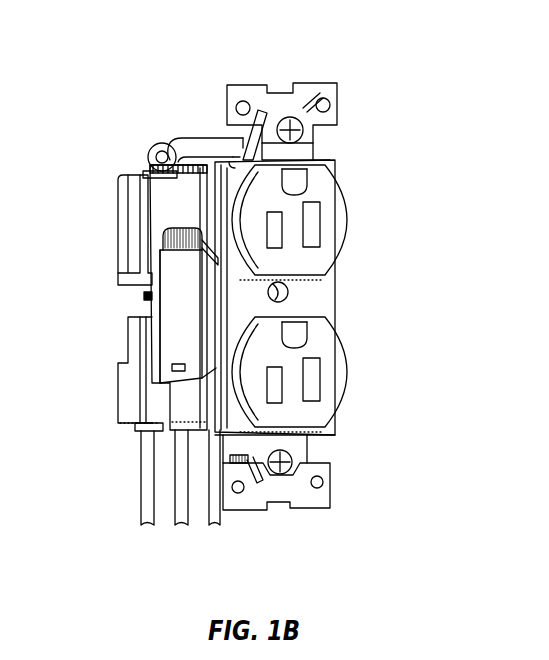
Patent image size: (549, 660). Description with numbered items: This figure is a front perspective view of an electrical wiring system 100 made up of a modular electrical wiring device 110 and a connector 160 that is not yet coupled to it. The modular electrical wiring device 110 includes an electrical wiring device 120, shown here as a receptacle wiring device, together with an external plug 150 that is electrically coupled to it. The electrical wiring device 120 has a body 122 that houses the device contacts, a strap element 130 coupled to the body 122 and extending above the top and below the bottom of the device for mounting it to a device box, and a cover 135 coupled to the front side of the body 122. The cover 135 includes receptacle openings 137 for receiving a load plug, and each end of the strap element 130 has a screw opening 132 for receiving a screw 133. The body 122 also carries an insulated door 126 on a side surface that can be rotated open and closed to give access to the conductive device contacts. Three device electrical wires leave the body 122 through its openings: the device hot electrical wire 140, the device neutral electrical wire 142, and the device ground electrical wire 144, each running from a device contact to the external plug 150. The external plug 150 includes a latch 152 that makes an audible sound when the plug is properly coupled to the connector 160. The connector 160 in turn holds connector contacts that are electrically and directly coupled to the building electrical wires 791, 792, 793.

The electrical wiring system 100 is at (146, 62).
The modular electrical wiring device 110 is at (376, 216).
The electrical wiring device 120 is at (318, 300).
The body 122 is at (185, 198).
The insulated door 126 is at (178, 328).
The strap element 130 is at (305, 88).
The screw opening 132 is at (272, 472).
The screw 133 is at (268, 472).
The cover 135 is at (320, 185).
The receptacle opening 137 is at (320, 383).
The device hot electrical wire 140 is at (150, 152).
The device neutral electrical wire 142 is at (233, 150).
The device ground electrical wire 144 is at (180, 143).
The external plug 150 is at (138, 210).
The latch 152 is at (146, 295).
The connector 160 is at (135, 405).
The building electrical wire 791 is at (140, 452).
The building electrical wire 792 is at (208, 513).
The building electrical wire 793 is at (175, 497).